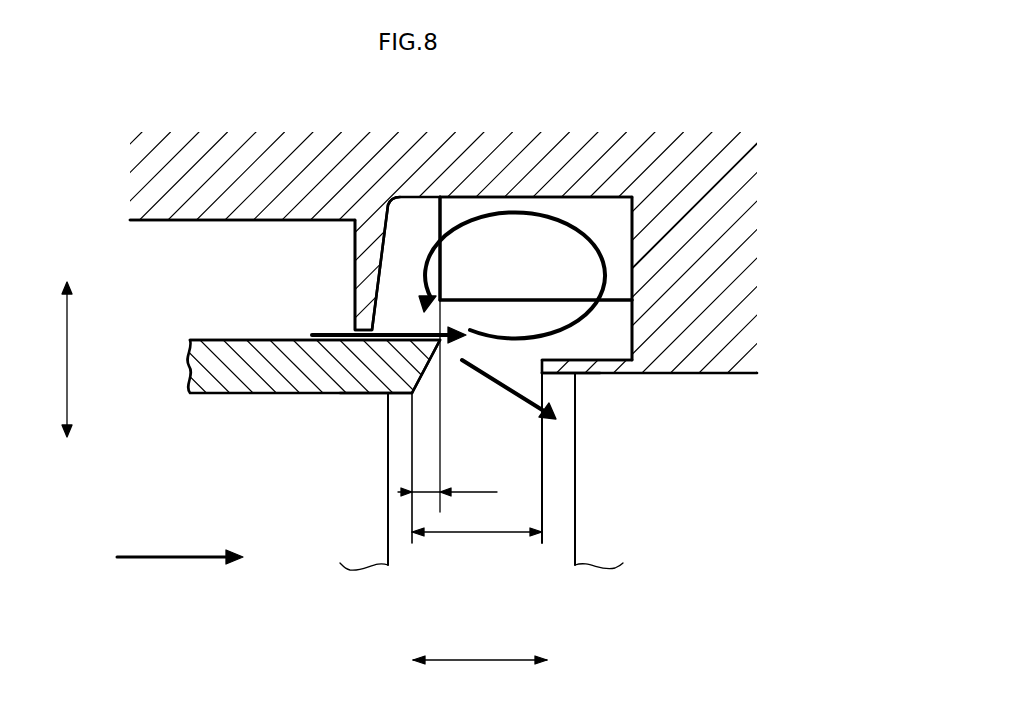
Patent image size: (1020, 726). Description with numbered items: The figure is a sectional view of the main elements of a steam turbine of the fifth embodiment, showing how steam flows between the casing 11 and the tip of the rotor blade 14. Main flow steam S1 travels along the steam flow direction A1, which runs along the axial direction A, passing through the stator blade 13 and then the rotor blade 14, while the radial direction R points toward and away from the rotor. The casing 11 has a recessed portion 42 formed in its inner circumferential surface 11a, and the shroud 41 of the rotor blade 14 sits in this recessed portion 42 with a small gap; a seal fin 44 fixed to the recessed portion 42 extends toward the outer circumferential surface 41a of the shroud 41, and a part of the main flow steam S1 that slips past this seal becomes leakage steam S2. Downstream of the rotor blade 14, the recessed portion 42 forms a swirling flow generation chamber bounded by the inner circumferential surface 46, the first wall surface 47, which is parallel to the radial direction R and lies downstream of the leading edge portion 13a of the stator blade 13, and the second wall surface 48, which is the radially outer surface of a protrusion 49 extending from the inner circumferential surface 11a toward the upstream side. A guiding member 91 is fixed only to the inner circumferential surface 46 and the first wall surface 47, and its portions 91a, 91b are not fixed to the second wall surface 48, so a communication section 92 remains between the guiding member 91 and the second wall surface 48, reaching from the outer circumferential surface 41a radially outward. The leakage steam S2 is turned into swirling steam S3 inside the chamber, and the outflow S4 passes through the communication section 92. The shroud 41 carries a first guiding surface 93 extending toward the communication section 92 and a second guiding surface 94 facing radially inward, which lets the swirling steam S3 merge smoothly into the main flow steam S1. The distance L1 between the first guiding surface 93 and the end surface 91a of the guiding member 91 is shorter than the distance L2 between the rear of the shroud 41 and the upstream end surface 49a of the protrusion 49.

The casing 11 is at (470, 116).
The inner circumferential surface 11a is at (720, 373).
The stator blade 13 is at (613, 574).
The leading edge portion 13a is at (574, 530).
The rotor blade 14 is at (348, 574).
The shroud 41 is at (213, 368).
The outer circumferential surface 41a is at (225, 340).
The recessed portion 42 is at (213, 226).
The seal fin 44 is at (363, 297).
The inner circumferential surface 46 is at (558, 200).
The first wall surface 47 is at (634, 236).
The second wall surface 48 is at (583, 363).
The protrusion 49 is at (552, 370).
The upstream end surface 49a is at (531, 360).
The guiding member 91 is at (610, 188).
The end surface 91a is at (433, 213).
The horizontal portion of plate member 91b is at (499, 304).
The communication section 92 is at (588, 317).
The first guiding surface 93 is at (362, 393).
The second guiding surface 94 is at (432, 385).
The main flow steam S1 is at (173, 560).
The leakage steam S2 is at (327, 334).
The swirling steam S3 is at (583, 240).
The outflow S4 is at (497, 383).
The axial direction A is at (480, 648).
The steam flow direction A1 is at (180, 546).
The radial direction R is at (57, 359).
The distance L1 is at (447, 406).
The distance L2 is at (477, 521).